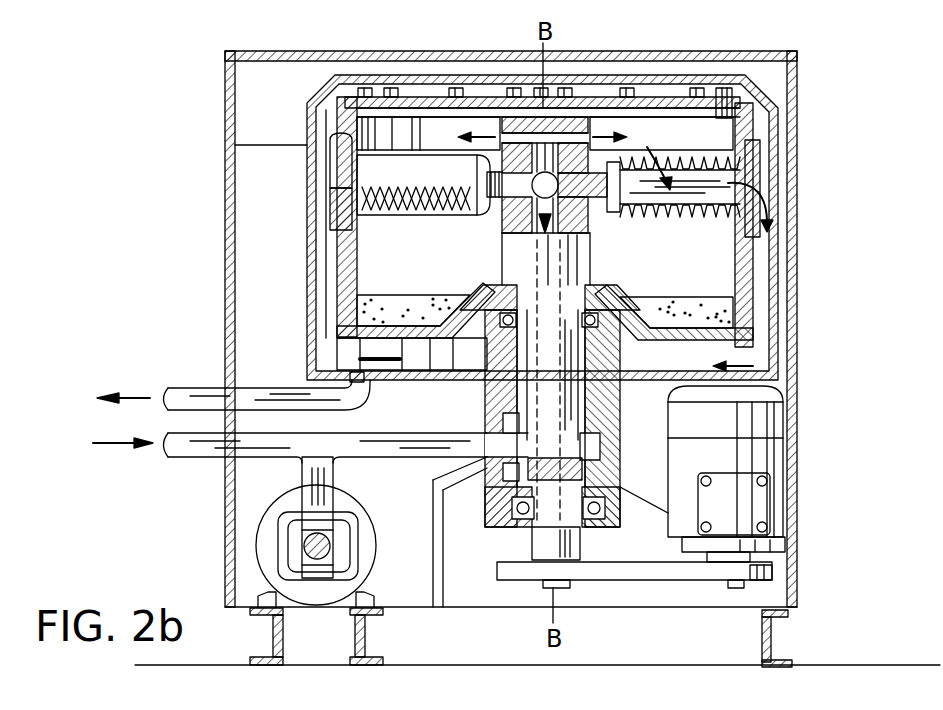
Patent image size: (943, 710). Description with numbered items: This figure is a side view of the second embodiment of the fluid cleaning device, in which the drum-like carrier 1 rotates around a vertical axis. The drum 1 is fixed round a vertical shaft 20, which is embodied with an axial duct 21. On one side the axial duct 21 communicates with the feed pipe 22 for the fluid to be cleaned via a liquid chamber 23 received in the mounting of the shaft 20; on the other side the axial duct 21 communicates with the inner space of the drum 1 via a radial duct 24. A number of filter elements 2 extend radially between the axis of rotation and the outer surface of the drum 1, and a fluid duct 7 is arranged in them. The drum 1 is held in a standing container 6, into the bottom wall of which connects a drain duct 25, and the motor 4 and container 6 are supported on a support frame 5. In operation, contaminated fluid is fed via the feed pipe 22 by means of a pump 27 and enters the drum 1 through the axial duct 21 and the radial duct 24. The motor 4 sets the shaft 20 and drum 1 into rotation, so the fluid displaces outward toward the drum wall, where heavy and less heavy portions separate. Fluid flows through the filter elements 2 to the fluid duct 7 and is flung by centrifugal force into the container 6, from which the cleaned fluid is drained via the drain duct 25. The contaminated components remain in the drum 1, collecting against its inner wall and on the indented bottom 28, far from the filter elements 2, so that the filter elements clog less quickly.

The drum-like carrier 1 is at (772, 98).
The filter elements 2 is at (453, 173).
The electric motor 4 is at (760, 463).
The support frame 5 is at (787, 657).
The standing container 6 is at (745, 288).
The fluid duct 7 is at (693, 172).
The vertical shaft 20 is at (570, 265).
The axial duct 21 is at (498, 247).
The feed pipe 22 is at (362, 450).
The liquid chamber 23 is at (587, 452).
The radial duct 24 is at (592, 170).
The drain duct 25 is at (200, 385).
The pump 27 is at (263, 545).
The indented bottom 28 is at (380, 327).